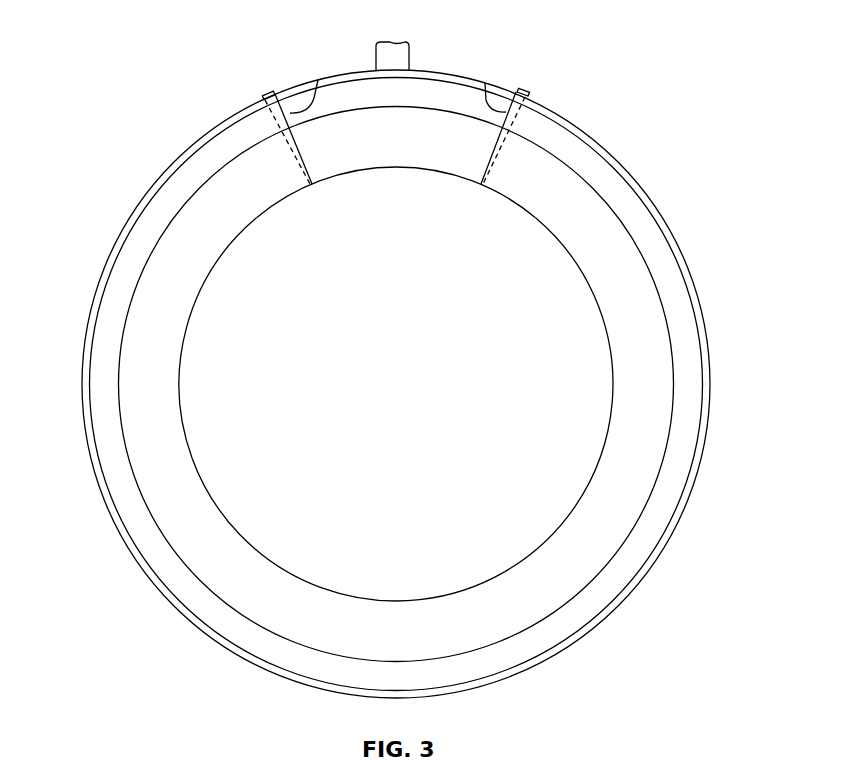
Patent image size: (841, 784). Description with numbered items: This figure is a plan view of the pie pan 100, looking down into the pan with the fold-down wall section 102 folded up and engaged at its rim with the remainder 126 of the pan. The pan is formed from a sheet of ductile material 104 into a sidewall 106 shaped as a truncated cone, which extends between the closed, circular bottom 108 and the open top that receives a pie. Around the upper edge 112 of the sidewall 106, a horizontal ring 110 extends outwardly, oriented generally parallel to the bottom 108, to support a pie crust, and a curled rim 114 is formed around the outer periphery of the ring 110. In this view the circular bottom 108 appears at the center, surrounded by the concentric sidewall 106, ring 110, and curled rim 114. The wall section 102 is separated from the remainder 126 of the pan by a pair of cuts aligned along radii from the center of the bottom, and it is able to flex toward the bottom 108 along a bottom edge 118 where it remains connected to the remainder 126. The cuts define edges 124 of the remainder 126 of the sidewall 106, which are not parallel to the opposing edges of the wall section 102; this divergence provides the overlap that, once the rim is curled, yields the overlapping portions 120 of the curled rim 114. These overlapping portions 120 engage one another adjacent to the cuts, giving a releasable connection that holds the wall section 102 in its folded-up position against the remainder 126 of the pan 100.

The pie pan 100 is at (108, 70).
The fold-down wall section 102 is at (432, 71).
The sheet of ductile material 104 is at (158, 492).
The sidewall 106 is at (180, 282).
The bottom 108 is at (415, 543).
The horizontal ring 110 is at (658, 250).
The upper edge 112 is at (665, 312).
The curled rim 114 is at (625, 167).
The bottom edge 118 is at (398, 167).
The overlapping portions of the curled rim 120 is at (268, 90).
The edges of the remainder of the sidewall 124 is at (317, 80).
The remainder of the pan 126 is at (632, 460).